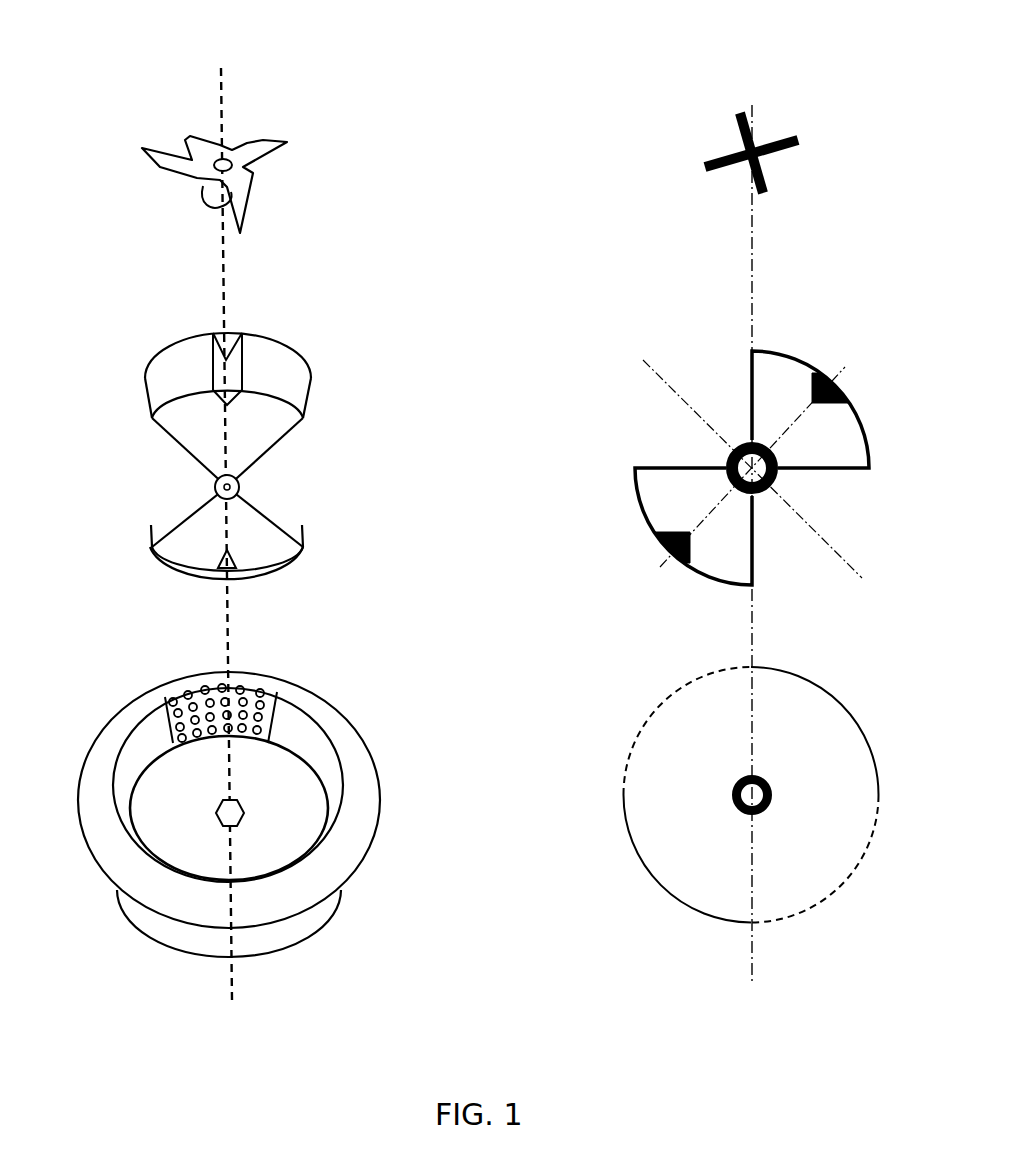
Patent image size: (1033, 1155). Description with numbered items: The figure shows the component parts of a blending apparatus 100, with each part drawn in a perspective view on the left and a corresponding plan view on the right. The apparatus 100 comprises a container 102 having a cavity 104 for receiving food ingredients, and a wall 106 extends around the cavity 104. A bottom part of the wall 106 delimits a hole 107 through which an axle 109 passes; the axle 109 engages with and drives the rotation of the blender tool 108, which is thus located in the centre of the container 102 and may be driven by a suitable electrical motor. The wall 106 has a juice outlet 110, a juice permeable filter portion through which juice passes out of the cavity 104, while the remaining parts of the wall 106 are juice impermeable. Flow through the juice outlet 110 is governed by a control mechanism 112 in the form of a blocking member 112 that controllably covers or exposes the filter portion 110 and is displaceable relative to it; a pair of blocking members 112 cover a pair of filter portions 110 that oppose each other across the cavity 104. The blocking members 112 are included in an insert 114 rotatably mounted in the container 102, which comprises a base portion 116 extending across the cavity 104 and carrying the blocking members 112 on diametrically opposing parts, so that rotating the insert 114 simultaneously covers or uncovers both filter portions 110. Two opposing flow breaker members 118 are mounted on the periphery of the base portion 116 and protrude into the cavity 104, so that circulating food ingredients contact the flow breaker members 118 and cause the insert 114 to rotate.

The apparatus 100 is at (148, 62).
The container 102 is at (357, 790).
The cavity 104 is at (275, 843).
The wall 106 is at (136, 758).
The hole 107 is at (220, 800).
The blender tool 108 is at (263, 148).
The axle 109 is at (217, 193).
The juice outlet 110 is at (197, 702).
The control mechanism 112 is at (290, 368).
The insert 114 is at (553, 410).
The base portion 116 is at (262, 430).
The flow breaker member 118 is at (235, 368).